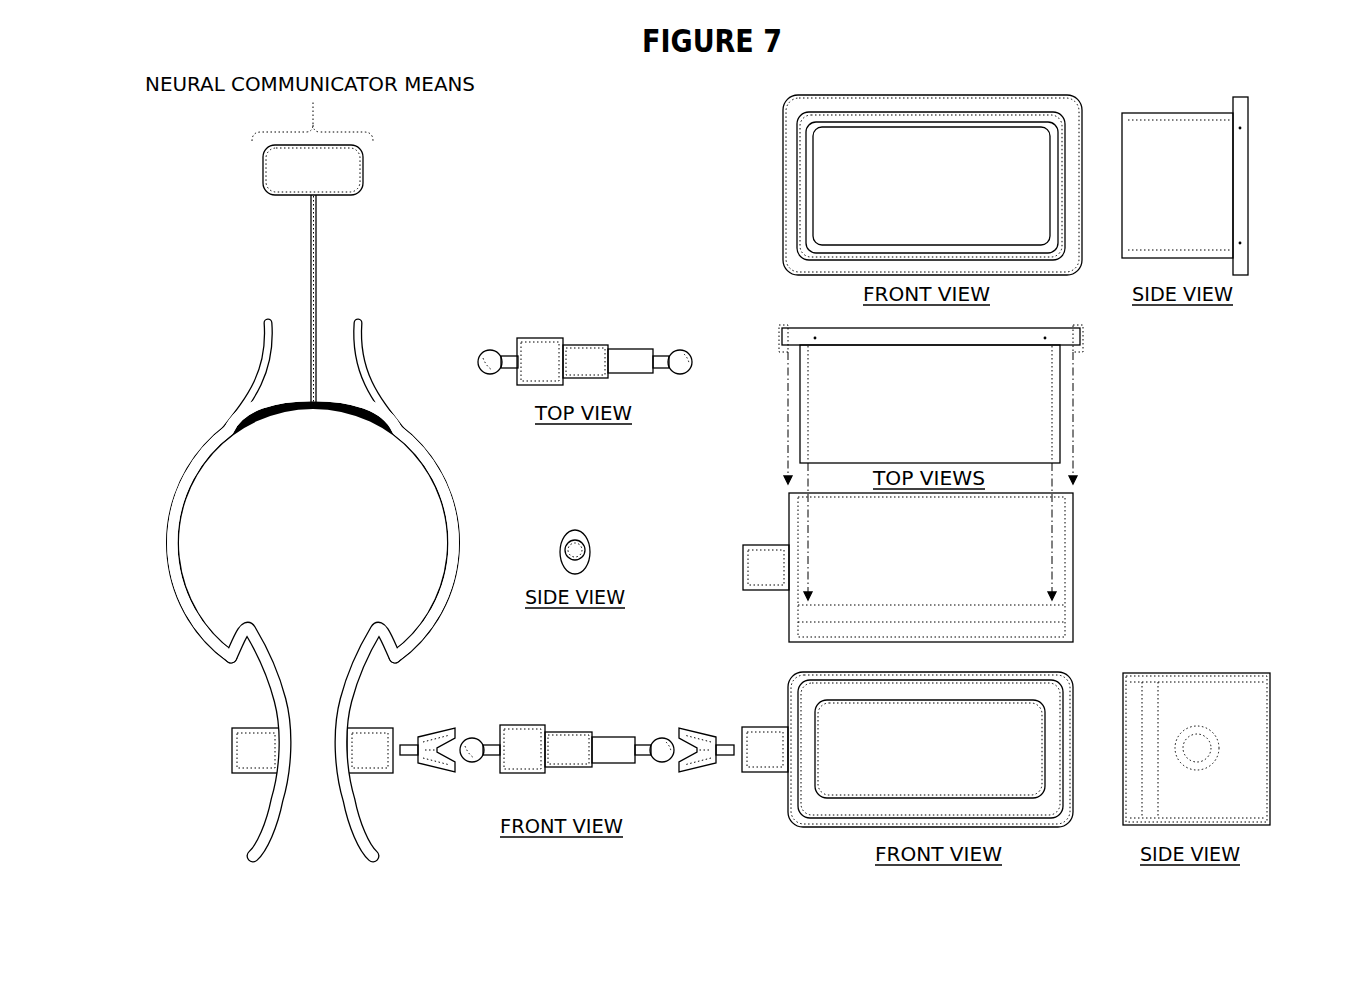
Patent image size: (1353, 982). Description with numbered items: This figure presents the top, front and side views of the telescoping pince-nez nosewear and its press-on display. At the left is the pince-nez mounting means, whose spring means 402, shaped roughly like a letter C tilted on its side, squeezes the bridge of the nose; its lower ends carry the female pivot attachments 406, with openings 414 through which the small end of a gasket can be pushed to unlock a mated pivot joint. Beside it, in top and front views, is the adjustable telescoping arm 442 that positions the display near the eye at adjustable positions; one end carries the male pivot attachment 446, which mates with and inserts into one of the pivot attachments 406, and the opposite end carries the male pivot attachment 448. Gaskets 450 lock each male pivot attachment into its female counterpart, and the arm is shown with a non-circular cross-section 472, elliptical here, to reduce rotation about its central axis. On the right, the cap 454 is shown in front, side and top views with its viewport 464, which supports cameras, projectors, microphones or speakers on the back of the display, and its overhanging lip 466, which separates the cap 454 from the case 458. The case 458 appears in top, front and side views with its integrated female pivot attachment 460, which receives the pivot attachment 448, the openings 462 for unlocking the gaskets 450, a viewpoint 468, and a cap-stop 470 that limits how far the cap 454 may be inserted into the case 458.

The spring means 402 is at (462, 548).
The pivot attachments 406 is at (251, 784).
The openings 414 is at (339, 752).
The adjustable telescoping arm 442 is at (583, 340).
The pivot attachment 446 is at (490, 350).
The pivot attachment 448 is at (681, 350).
The gaskets 450 is at (425, 771).
The cap 454 is at (783, 162).
The case 458 is at (1075, 540).
The pivot attachment 460 is at (770, 542).
The openings 462 is at (795, 565).
The viewport 464 is at (940, 240).
The overhanging lip 466 is at (788, 353).
The viewpoint 468 is at (835, 620).
The cap-stop 470 is at (1050, 596).
The non-circular cross-section 472 is at (583, 530).